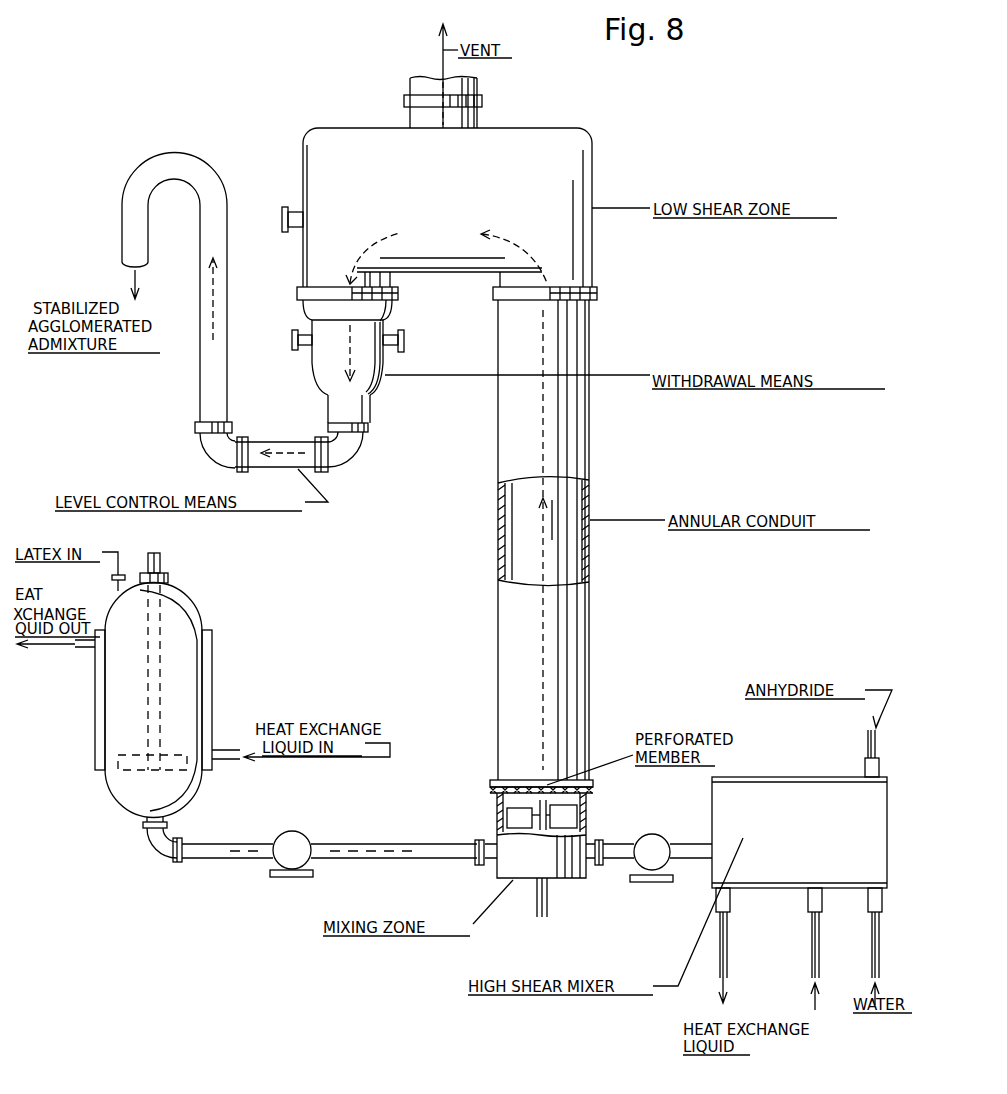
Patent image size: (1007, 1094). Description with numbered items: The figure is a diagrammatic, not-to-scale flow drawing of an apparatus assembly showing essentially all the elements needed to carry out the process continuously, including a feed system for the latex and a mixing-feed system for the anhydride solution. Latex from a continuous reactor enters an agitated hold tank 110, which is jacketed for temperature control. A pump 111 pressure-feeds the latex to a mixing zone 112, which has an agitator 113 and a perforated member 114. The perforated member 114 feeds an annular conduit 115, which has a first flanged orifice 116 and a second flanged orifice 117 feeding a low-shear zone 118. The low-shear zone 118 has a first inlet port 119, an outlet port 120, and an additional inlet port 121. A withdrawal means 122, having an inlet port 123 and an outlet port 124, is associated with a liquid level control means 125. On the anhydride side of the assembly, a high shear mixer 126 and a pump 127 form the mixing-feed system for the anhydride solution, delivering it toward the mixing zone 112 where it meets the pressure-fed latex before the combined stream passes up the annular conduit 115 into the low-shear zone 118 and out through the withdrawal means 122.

The agitated hold tank 110 is at (125, 810).
The pump 111 is at (300, 831).
The mixing zone 112 is at (568, 885).
The agitator 113 is at (585, 802).
The perforated member 114 is at (505, 798).
The annular conduit 115 is at (590, 468).
The first flanged orifice 116 is at (500, 778).
The second flanged orifice 117 is at (590, 312).
The low-shear zone 118 is at (592, 240).
The first inlet port 119 is at (592, 276).
The outlet port 120 is at (315, 287).
The additional inlet port 121 is at (295, 210).
The withdrawal means 122 is at (320, 355).
The inlet port 123 is at (318, 312).
The outlet port 124 is at (335, 418).
The liquid level control means 125 is at (212, 460).
The high shear mixer 126 is at (823, 836).
The pump 127 is at (670, 812).